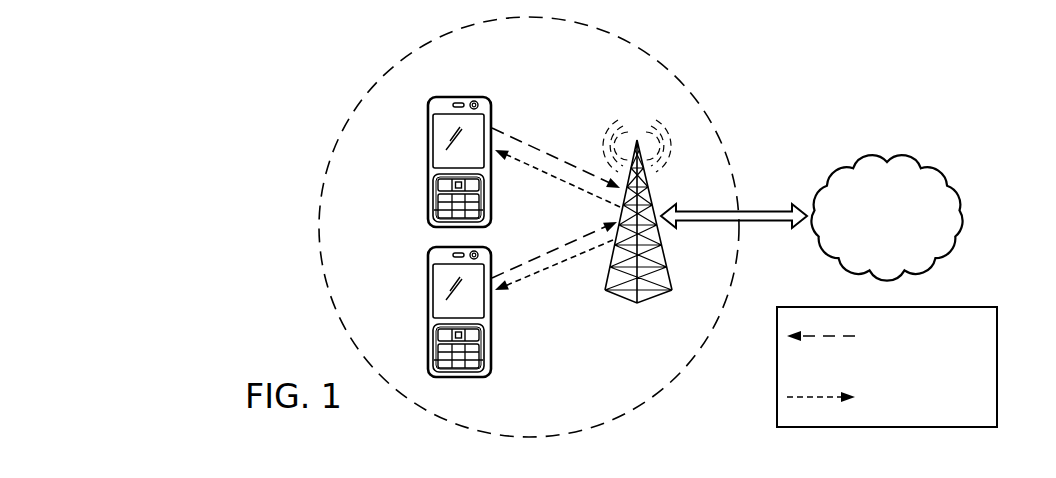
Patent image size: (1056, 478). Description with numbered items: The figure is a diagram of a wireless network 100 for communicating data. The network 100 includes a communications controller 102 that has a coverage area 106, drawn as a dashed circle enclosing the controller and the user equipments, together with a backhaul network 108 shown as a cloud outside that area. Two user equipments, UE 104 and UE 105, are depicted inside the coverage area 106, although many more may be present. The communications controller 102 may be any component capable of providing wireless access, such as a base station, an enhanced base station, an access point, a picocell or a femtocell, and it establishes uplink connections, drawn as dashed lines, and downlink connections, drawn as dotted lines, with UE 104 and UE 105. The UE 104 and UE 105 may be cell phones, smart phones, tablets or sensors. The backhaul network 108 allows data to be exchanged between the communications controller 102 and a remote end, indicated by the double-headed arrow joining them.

The network 100 is at (272, 83).
The communications controller 102 is at (653, 293).
The UE 104 is at (428, 163).
The UE 105 is at (428, 312).
The coverage area 106 is at (310, 186).
The backhaul network 108 is at (908, 156).